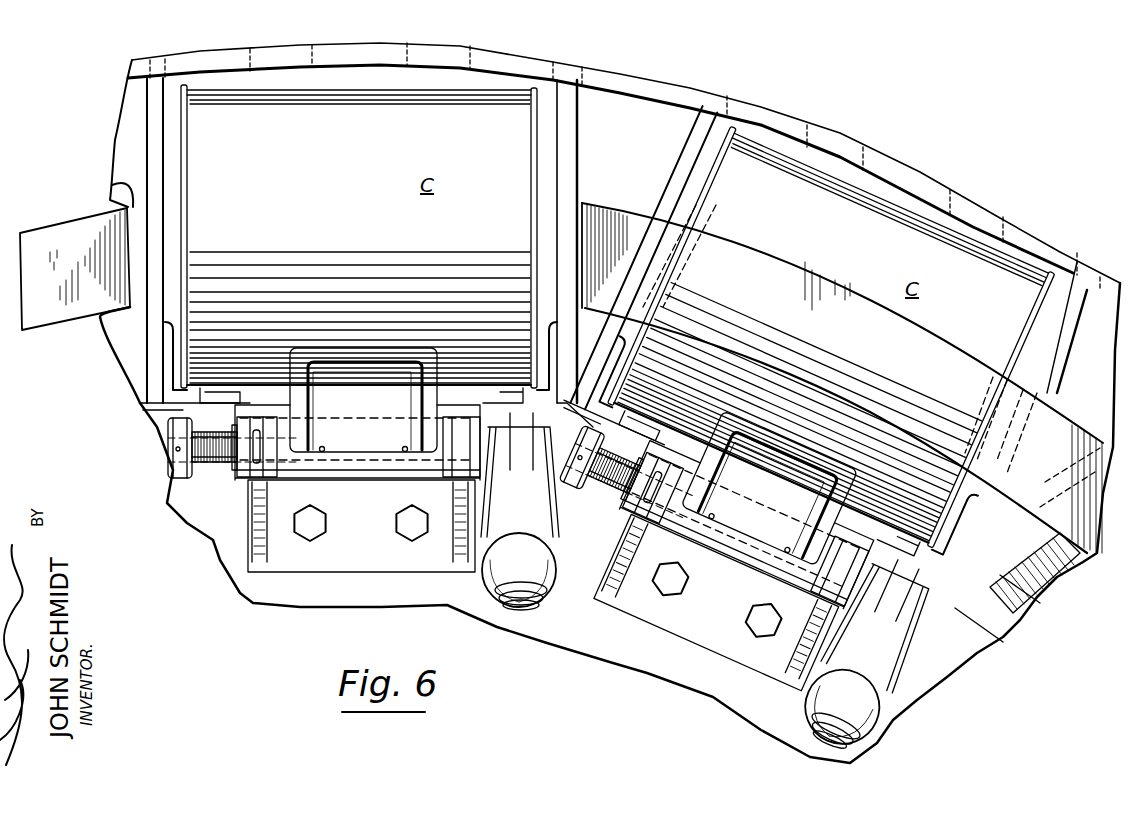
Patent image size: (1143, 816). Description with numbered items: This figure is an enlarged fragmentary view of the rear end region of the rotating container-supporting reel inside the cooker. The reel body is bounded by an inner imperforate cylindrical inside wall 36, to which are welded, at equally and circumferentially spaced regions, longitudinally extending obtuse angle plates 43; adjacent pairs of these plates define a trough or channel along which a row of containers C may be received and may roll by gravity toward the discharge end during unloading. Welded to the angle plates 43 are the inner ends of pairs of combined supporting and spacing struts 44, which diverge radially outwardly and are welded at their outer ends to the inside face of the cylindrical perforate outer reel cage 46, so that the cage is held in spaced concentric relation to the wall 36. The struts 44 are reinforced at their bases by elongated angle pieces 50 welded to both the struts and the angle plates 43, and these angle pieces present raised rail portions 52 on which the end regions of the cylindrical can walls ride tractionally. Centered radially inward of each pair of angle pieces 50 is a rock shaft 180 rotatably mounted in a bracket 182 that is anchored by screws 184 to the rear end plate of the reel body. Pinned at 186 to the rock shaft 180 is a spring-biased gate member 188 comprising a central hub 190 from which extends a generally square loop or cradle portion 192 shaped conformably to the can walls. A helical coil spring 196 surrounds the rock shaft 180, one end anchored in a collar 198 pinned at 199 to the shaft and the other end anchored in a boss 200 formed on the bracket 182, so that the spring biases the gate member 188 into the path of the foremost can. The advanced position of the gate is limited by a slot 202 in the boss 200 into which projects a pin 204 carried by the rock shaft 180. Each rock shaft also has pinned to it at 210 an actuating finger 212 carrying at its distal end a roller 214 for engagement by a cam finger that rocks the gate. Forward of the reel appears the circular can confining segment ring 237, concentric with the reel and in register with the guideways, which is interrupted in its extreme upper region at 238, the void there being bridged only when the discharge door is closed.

The inner imperforate cylindrical inside wall 36 is at (176, 449).
The obtuse angle plate 43 is at (152, 412).
The strut 44 is at (147, 130).
The outer reel cage 46 is at (670, 87).
The angle piece 50 is at (165, 362).
The raised rail portion 52 is at (215, 393).
The rock shaft 180 is at (455, 492).
The bracket 182 is at (298, 568).
The screws 184 is at (395, 523).
The pin 186 is at (405, 447).
The gate member 188 is at (342, 346).
The hub 190 is at (336, 478).
The cradle portion 192 is at (325, 365).
The helical coil spring 196 is at (215, 462).
The collar 198 is at (176, 480).
The pin 199 is at (172, 460).
The boss 200 is at (236, 478).
The slot 202 is at (240, 470).
The pin 204 is at (257, 430).
The pin 210 is at (506, 440).
The actuating finger 212 is at (554, 512).
The roller 214 is at (548, 580).
The segment ring 237 is at (50, 318).
The interruption in segment ring 238 is at (128, 207).